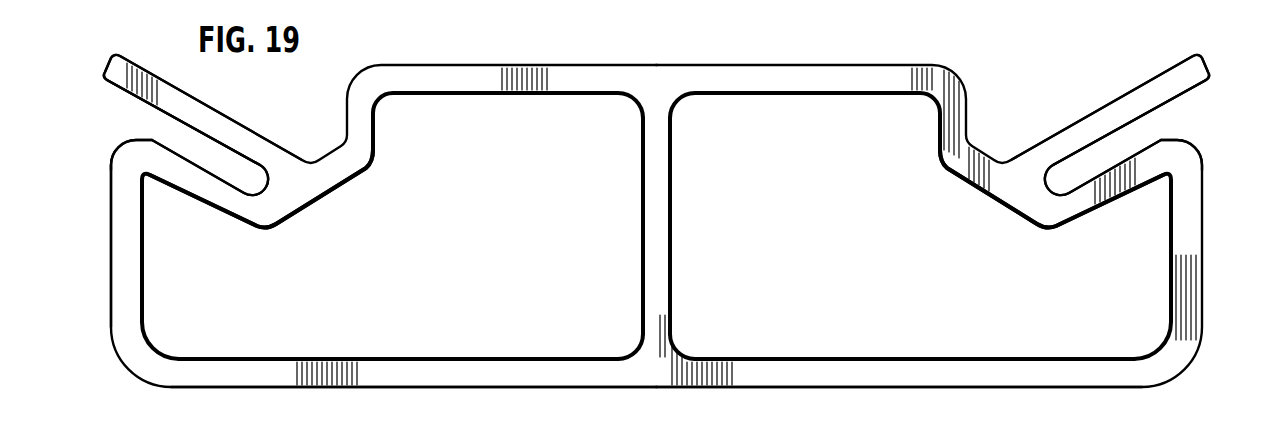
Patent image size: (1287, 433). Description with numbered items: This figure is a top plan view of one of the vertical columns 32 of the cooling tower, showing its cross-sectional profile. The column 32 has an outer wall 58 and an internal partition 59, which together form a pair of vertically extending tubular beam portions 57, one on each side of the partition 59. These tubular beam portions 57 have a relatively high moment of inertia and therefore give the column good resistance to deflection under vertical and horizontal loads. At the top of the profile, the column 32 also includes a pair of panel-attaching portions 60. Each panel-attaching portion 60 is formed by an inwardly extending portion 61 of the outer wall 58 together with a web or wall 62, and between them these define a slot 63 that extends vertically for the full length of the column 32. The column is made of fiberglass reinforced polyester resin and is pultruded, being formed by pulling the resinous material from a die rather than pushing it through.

The vertical column 32 is at (886, 383).
The tubular beam portion 57 is at (403, 377).
The outer wall 58 is at (135, 353).
The partition 59 is at (652, 230).
The panel-attaching portion 60 is at (125, 143).
The inwardly extending portion 61 is at (205, 188).
The web 62 is at (205, 101).
The slot 63 is at (162, 127).